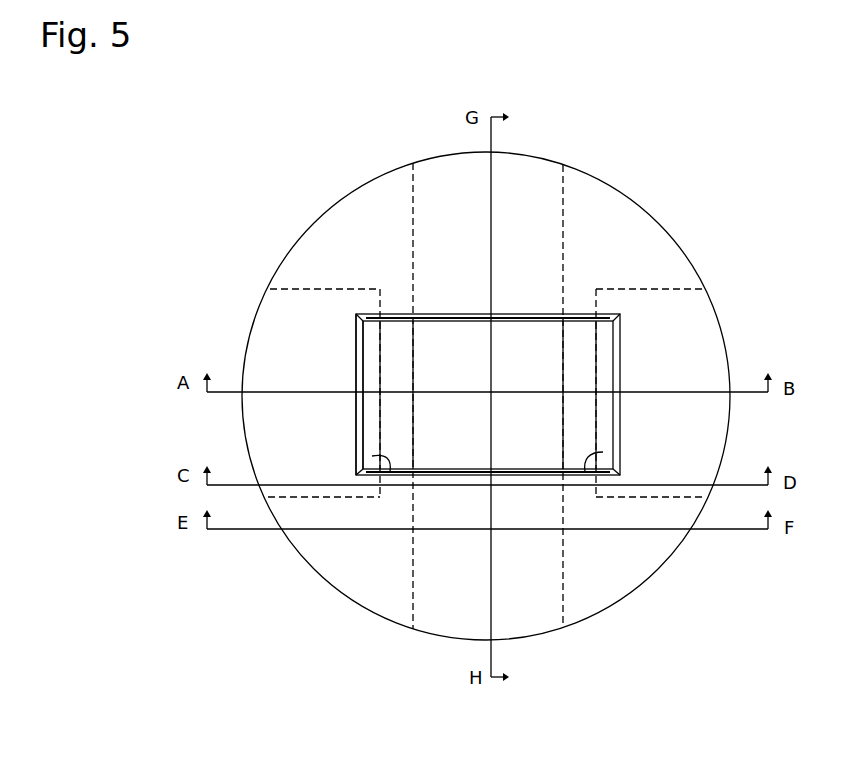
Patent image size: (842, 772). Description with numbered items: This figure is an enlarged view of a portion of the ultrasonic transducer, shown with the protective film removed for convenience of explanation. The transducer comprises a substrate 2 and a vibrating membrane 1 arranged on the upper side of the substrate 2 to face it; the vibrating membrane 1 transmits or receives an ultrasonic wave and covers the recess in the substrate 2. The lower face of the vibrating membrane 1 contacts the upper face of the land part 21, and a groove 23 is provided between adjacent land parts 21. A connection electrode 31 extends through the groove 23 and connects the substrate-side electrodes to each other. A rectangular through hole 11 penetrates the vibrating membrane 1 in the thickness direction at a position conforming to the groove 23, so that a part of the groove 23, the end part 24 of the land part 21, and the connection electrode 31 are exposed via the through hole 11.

The vibrating membrane 1 is at (633, 573).
The substrate 2 is at (578, 337).
The through hole 11 is at (355, 365).
The land part 21 is at (702, 323).
The groove 23 is at (587, 381).
The end part 24 is at (390, 472).
The connection electrode 31 is at (455, 348).